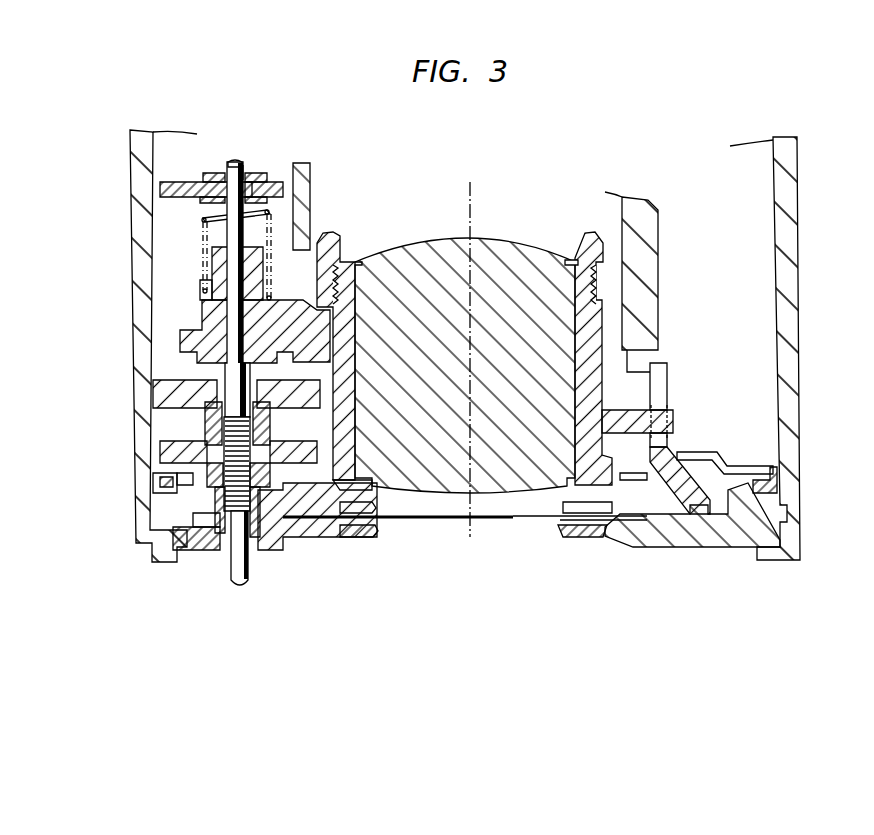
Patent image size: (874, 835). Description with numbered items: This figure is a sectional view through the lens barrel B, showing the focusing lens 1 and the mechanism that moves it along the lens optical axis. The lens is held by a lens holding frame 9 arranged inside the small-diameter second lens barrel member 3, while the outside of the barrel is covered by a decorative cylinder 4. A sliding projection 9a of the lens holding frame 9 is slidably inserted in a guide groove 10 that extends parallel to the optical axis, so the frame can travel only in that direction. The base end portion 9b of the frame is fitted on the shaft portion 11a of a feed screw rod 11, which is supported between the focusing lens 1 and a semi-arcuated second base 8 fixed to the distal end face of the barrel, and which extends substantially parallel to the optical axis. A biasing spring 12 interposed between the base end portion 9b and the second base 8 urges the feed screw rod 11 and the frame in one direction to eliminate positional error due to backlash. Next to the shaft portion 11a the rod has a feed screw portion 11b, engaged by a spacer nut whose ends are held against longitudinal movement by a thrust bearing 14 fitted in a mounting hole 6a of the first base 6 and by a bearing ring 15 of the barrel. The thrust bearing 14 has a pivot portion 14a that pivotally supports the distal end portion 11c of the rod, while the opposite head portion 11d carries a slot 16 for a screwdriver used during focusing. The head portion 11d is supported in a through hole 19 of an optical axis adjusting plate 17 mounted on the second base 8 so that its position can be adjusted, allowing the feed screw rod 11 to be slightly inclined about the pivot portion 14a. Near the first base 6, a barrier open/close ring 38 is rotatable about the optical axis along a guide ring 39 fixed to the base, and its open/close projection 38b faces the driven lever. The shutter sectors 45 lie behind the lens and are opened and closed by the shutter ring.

The lens barrel B is at (120, 134).
The focusing lens 1 is at (523, 255).
The second lens barrel member 3 is at (640, 260).
The decorative cylinder 4 is at (790, 263).
The first base 6 is at (293, 505).
The mounting hole 6a is at (190, 545).
The second base 8 is at (160, 190).
The lens holding frame 9 is at (345, 295).
The sliding projection 9a is at (750, 470).
The base end portion 9b is at (213, 315).
The guide groove 10 is at (660, 378).
The feed screw rod 11 is at (237, 378).
The shaft portion 11a is at (233, 272).
The feed screw portion 11b is at (215, 455).
The distal end portion 11c is at (244, 580).
The head portion 11d is at (245, 177).
The biasing spring 12 is at (200, 219).
The thrust bearing 14 is at (220, 500).
The pivot portion 14a is at (225, 537).
The bearing ring 15 is at (207, 400).
The slot 16 is at (232, 162).
The optical axis adjusting plate 17 is at (207, 172).
The through hole 19 is at (253, 178).
The barrier open/close ring 38 is at (703, 453).
The open/close projection 38b is at (663, 420).
The guide ring 39 is at (153, 477).
The sectors 45 is at (488, 520).